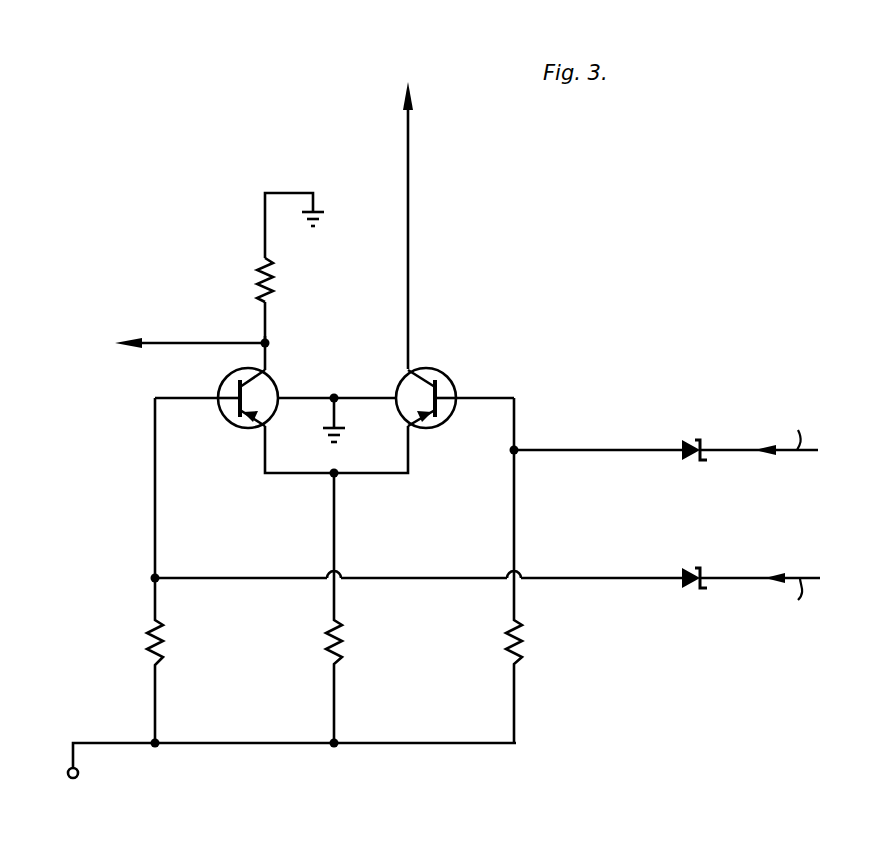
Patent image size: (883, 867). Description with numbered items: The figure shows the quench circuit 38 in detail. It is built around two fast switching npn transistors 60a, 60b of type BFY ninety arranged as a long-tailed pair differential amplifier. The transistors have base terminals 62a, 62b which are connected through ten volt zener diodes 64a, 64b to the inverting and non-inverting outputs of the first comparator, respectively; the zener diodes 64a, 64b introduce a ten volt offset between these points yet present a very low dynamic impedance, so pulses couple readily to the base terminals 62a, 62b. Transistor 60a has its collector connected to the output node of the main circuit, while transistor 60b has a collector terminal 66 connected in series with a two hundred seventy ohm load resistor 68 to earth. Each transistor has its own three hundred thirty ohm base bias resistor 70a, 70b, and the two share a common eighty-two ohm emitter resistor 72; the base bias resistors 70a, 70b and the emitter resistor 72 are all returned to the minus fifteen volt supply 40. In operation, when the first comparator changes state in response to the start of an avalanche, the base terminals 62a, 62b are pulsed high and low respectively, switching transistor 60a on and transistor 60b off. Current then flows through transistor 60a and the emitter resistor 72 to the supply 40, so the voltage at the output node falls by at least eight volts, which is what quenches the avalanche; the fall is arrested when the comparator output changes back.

The quench circuit 38 is at (580, 236).
The −15 V supply 40 is at (78, 777).
The fast switching npn transistor 60a is at (448, 382).
The fast switching npn transistor 60b is at (270, 384).
The base terminal 62a is at (514, 426).
The base terminal 62b is at (155, 432).
The zener diode 64a is at (690, 444).
The zener diode 64b is at (688, 586).
The collector terminal 66 is at (268, 342).
The load resistor 68 is at (258, 284).
The base bias resistor 70a is at (160, 640).
The base bias resistor 70b is at (518, 634).
The emitter resistor 72 is at (340, 640).